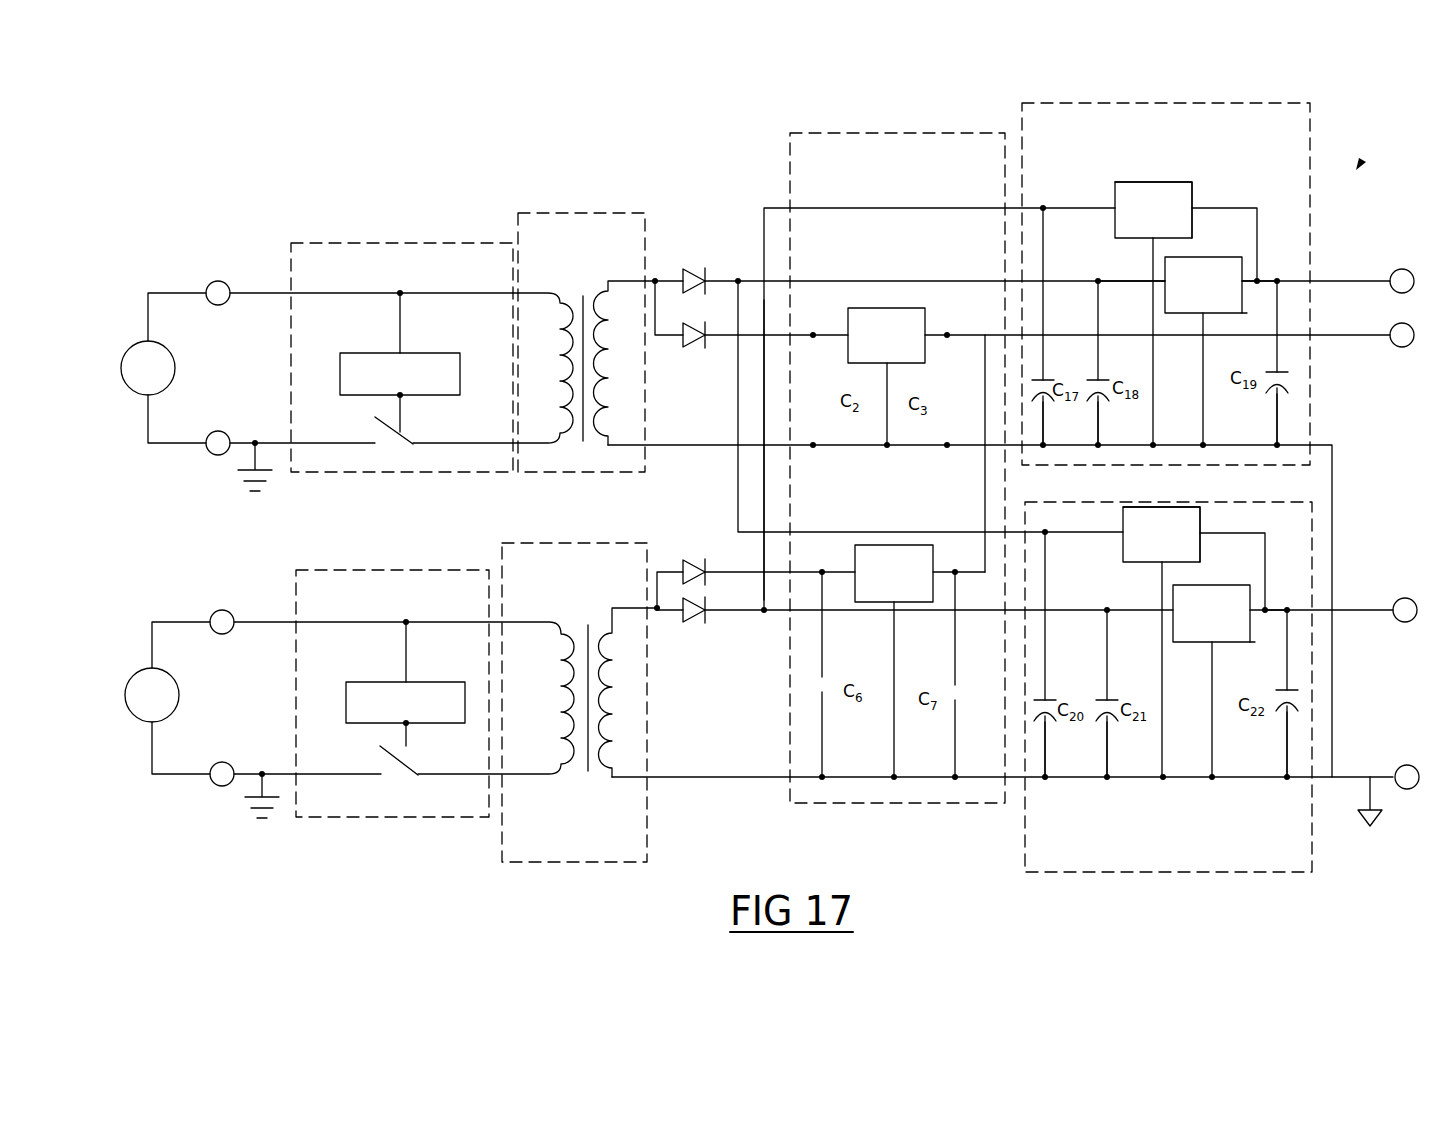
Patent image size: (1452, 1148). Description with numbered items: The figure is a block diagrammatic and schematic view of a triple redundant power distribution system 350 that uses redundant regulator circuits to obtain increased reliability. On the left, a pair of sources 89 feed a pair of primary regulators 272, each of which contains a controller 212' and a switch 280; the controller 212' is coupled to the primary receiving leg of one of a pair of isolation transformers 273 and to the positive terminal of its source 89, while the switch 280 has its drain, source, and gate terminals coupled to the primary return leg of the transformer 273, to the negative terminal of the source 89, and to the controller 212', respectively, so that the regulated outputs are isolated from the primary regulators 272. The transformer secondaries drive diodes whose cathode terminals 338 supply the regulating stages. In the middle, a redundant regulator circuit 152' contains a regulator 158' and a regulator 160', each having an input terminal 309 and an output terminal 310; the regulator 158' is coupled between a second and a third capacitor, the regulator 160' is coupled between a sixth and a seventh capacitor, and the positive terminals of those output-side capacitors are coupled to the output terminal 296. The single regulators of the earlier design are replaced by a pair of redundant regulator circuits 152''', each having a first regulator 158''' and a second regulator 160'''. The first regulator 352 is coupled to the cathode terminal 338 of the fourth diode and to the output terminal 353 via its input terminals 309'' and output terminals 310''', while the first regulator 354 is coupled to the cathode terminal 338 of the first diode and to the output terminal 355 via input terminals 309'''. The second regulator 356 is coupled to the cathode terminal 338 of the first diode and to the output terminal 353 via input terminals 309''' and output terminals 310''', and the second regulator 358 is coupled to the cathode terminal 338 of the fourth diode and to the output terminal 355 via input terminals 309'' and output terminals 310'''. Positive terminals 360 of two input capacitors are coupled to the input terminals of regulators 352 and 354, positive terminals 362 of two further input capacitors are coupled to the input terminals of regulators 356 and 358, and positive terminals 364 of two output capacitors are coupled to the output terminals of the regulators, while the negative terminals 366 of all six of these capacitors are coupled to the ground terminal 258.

The source 89 is at (137, 396).
The primary regulator 272 is at (313, 243).
The isolation transformer 273 is at (561, 213).
The controller 212' is at (413, 519).
The switch 280 is at (412, 440).
The cathode terminal 338 is at (708, 268).
The redundant regulator circuit 152' is at (897, 453).
The redundant regulator circuit 152''' is at (1167, 492).
The regulator 158' is at (887, 301).
The first regulator 158''' is at (1112, 350).
The regulator 160' is at (895, 541).
The second regulator 160''' is at (1233, 408).
The input terminal 309 is at (844, 406).
The input terminal 309'' is at (718, 450).
The input terminal 309''' is at (1102, 430).
The output terminal 310 is at (965, 429).
The output terminal 310''' is at (1305, 430).
The triple redundant power distribution system 350 is at (1358, 166).
The first regulator 352 is at (1150, 182).
The output terminal 353 is at (1402, 269).
The first regulator 354 is at (1182, 485).
The output terminal 355 is at (1405, 598).
The second regulator 356 is at (1242, 305).
The second regulator 358 is at (1250, 625).
The positive terminal 360 is at (1050, 378).
The positive terminal 362 is at (1100, 378).
The positive terminal 364 is at (1283, 371).
The negative terminal 366 is at (1050, 404).
The output terminal 296 is at (1404, 348).
The ground terminal 258 is at (1382, 797).